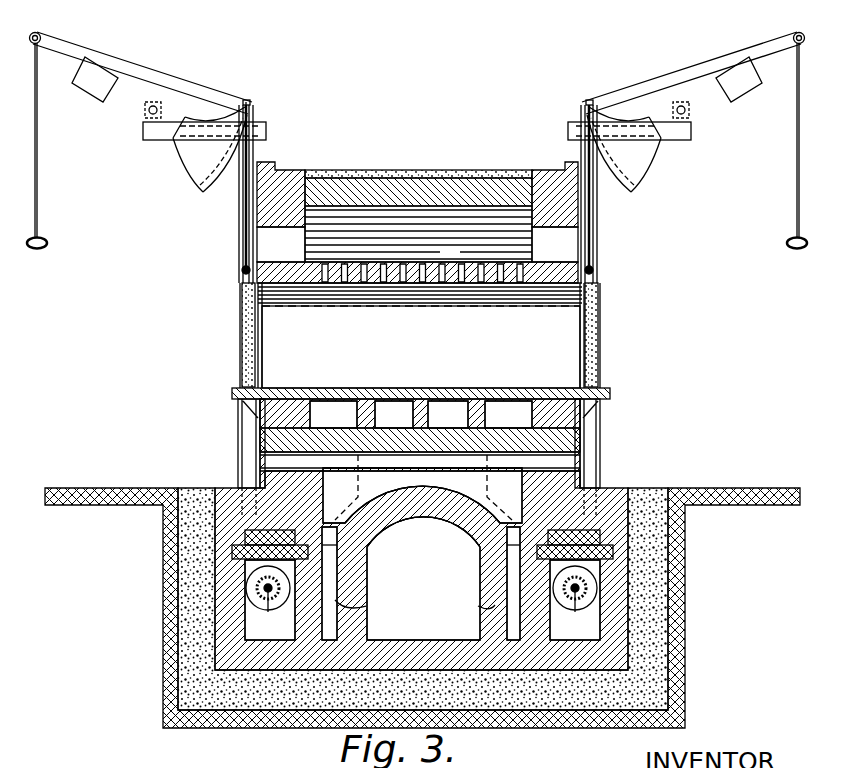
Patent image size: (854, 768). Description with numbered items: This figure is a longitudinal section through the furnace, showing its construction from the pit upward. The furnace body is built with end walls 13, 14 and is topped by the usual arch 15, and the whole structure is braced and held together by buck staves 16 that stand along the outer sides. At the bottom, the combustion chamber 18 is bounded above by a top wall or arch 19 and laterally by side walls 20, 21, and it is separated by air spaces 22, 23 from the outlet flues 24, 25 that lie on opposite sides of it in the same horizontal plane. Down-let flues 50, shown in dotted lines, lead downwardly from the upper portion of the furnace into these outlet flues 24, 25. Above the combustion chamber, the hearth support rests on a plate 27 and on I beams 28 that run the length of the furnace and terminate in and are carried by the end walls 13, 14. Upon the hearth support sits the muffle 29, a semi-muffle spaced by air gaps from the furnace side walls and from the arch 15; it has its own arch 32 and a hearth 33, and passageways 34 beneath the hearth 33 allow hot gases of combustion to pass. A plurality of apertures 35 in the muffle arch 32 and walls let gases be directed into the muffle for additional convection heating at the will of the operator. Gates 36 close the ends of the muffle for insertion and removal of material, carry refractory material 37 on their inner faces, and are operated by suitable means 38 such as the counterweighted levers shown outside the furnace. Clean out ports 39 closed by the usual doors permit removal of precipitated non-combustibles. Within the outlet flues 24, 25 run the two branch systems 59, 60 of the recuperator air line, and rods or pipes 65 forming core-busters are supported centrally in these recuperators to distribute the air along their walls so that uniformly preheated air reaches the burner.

The end wall 13 is at (262, 212).
The end wall 14 is at (570, 212).
The arch 15 is at (430, 168).
The buck staves 16 is at (240, 436).
The combustion chamber 18 is at (423, 578).
The top wall or arch 19 is at (462, 520).
The side wall 20 is at (337, 580).
The side wall 21 is at (482, 582).
The air space 22 is at (474, 605).
The air space 23 is at (364, 605).
The outlet flue 24 is at (270, 586).
The outlet flue 25 is at (575, 586).
The plate 27 is at (436, 452).
The I beams 28 is at (420, 451).
The muffle 29 is at (421, 347).
The arch 32 is at (520, 283).
The hearth 33 is at (327, 393).
The passageways 34 is at (421, 414).
The apertures 35 is at (400, 275).
The gates 36 is at (243, 338).
The refractory material 37 is at (262, 332).
The gate operating means 38 is at (135, 108).
The clean out ports 39 is at (417, 244).
The down-let flues 50 is at (472, 478).
The branch system 59 is at (268, 585).
The branch system 60 is at (575, 582).
The rods or pipes 65 is at (272, 604).